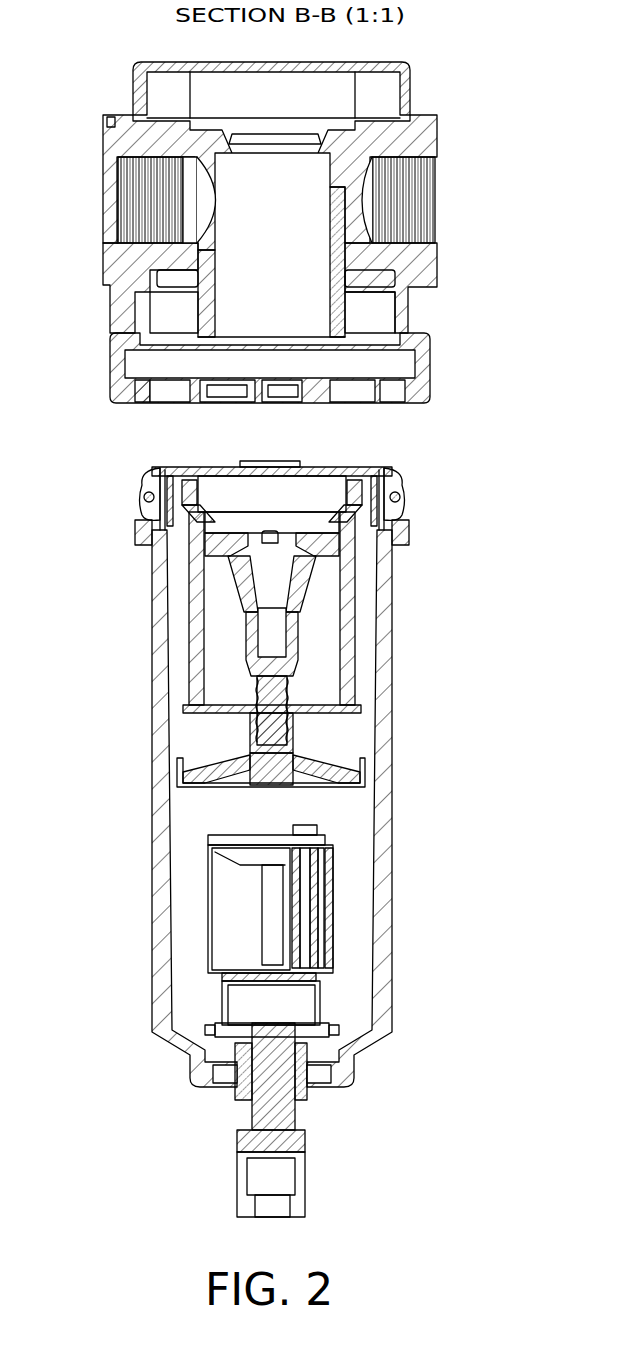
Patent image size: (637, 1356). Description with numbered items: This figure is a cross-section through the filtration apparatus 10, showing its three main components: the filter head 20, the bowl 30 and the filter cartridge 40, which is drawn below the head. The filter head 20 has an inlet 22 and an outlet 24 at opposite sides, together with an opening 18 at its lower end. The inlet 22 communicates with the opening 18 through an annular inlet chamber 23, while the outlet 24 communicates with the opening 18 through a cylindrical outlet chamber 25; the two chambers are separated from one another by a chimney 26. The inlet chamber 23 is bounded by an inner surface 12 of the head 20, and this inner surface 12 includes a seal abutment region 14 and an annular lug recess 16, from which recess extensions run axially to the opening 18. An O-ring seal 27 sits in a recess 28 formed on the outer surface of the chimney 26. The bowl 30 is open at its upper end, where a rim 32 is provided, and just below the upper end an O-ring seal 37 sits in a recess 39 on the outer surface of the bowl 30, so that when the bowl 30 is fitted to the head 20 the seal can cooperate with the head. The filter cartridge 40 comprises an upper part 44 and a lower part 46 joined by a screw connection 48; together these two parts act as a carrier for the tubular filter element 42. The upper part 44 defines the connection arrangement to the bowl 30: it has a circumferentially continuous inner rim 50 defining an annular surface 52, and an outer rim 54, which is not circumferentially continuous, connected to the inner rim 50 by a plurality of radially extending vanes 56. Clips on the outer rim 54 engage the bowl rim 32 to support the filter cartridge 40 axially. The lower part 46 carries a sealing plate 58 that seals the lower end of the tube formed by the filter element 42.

The filtration apparatus 10 is at (113, 48).
The inner surface 12 is at (430, 345).
The seal abutment region 14 is at (113, 345).
The annular lug recess 16 is at (413, 370).
The opening 18 is at (140, 404).
The filter head 20 is at (110, 378).
The inlet 22 is at (437, 190).
The annular inlet chamber 23 is at (360, 337).
The outlet 24 is at (103, 160).
The cylindrical outlet chamber 25 is at (253, 203).
The chimney 26 is at (190, 300).
The O-ring seal 27 is at (193, 325).
The recess 28 is at (350, 325).
The bowl 30 is at (155, 850).
The rim 32 is at (150, 470).
The O-ring seal 37 is at (148, 494).
The recess 39 is at (400, 498).
The filter cartridge 40 is at (148, 603).
The filter element 42 is at (187, 618).
The upper part 44 is at (305, 633).
The lower part 46 is at (300, 740).
The screw connection 48 is at (290, 700).
The inner rim 50 is at (350, 478).
The annular surface 52 is at (200, 487).
The outer rim 54 is at (395, 472).
The radially extending vanes 56 is at (160, 530).
The sealing plate 58 is at (220, 717).